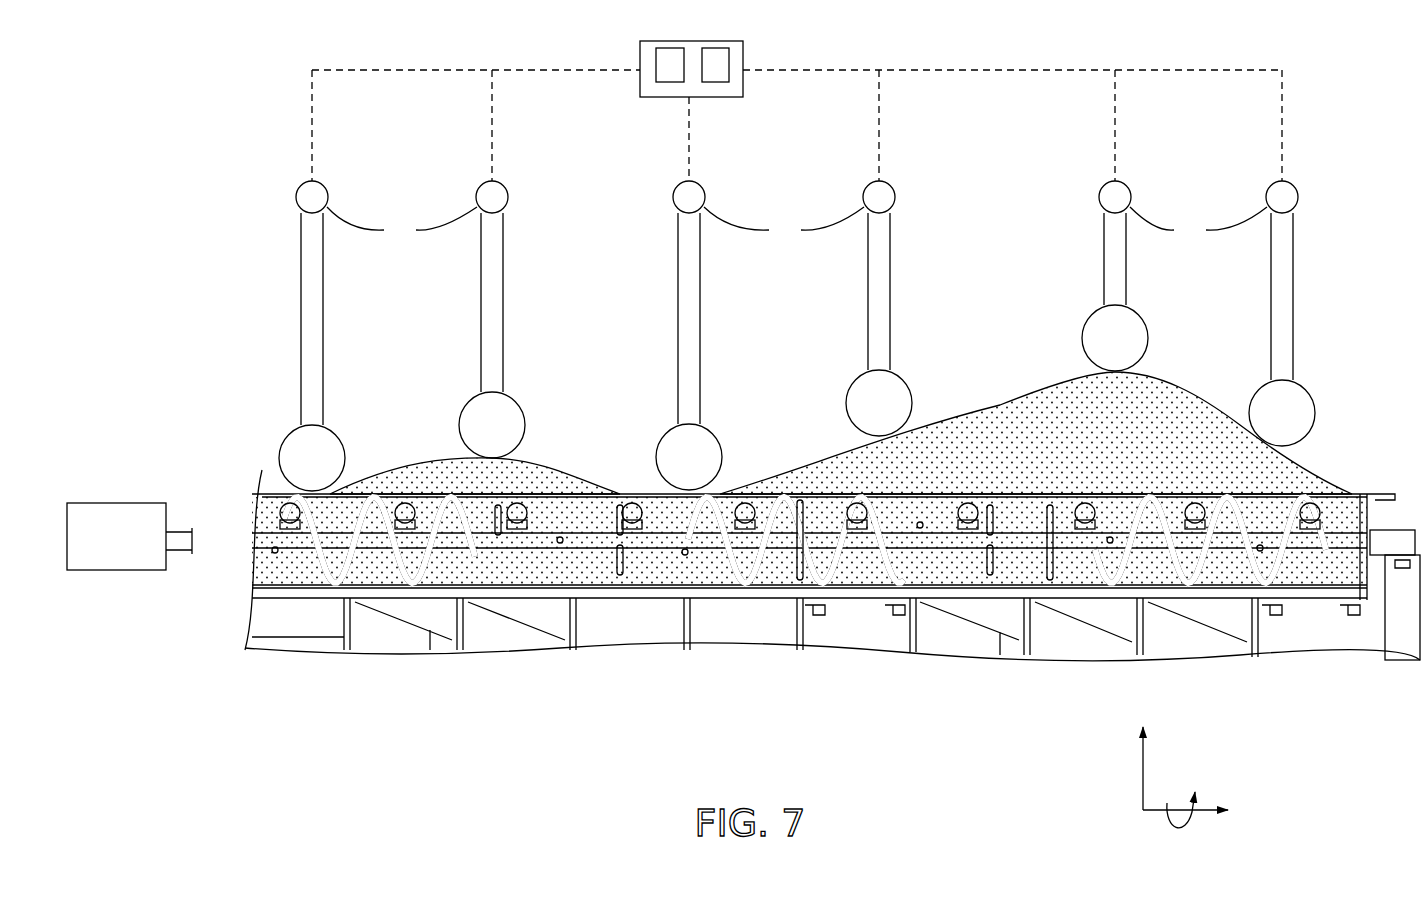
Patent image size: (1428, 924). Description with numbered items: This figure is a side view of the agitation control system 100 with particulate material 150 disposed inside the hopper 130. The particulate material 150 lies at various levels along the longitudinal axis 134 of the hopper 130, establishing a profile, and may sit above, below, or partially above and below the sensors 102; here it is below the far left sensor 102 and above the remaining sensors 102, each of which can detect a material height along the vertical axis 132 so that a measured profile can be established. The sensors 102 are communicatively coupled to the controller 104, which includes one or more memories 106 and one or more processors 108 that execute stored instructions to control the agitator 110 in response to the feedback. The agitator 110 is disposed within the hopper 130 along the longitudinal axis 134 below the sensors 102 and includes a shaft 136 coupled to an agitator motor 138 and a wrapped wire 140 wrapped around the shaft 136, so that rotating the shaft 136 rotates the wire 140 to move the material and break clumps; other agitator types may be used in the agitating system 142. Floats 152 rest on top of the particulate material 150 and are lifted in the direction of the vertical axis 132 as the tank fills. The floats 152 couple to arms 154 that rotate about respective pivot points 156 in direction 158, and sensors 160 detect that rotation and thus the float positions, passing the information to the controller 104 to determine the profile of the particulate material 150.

The agitation control system 100 is at (938, 692).
The sensors 102 is at (278, 513).
The controller 104 is at (662, 41).
The memories 106 is at (729, 58).
The processors 108 is at (656, 58).
The agitator 110 is at (452, 688).
The hopper 130 is at (1307, 636).
The vertical axis 132 is at (1143, 772).
The longitudinal axis 134 is at (1195, 810).
The shaft 136 is at (586, 540).
The agitator motor 138 is at (118, 570).
The wrapped wire 140 is at (880, 572).
The agitating system 142 is at (677, 694).
The particulate material 150 is at (1032, 382).
The floats 152 is at (291, 448).
The arms 154 is at (308, 314).
The pivot points 156 is at (275, 195).
The direction 158 is at (1180, 832).
The sensors 160 is at (797, 225).